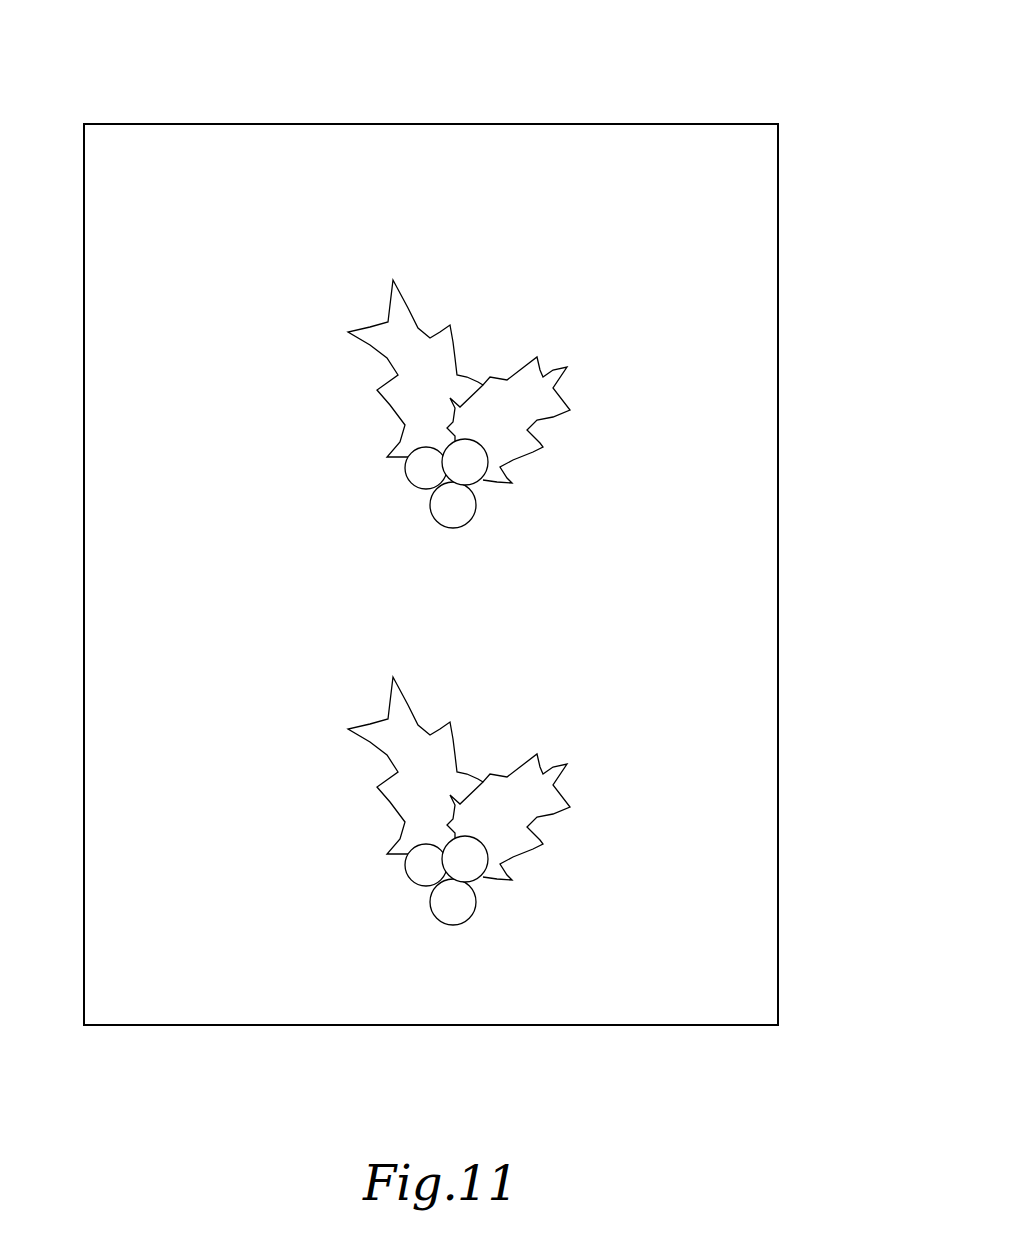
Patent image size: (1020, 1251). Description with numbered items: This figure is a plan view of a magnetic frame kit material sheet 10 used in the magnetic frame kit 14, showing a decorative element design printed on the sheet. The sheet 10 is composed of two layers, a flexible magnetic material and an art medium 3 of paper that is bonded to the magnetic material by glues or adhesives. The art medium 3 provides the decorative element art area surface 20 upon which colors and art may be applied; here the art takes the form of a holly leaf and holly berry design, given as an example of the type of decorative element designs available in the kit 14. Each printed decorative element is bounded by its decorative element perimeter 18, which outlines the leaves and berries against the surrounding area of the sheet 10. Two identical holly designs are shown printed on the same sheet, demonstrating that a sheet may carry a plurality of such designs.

The magnetic frame kit 14 is at (784, 96).
The decorative element perimeters 18 is at (779, 510).
The art medium 3 is at (750, 662).
The magnetic frame kit material sheet 10 is at (779, 938).
The decorative element art area surface 20 is at (118, 677).